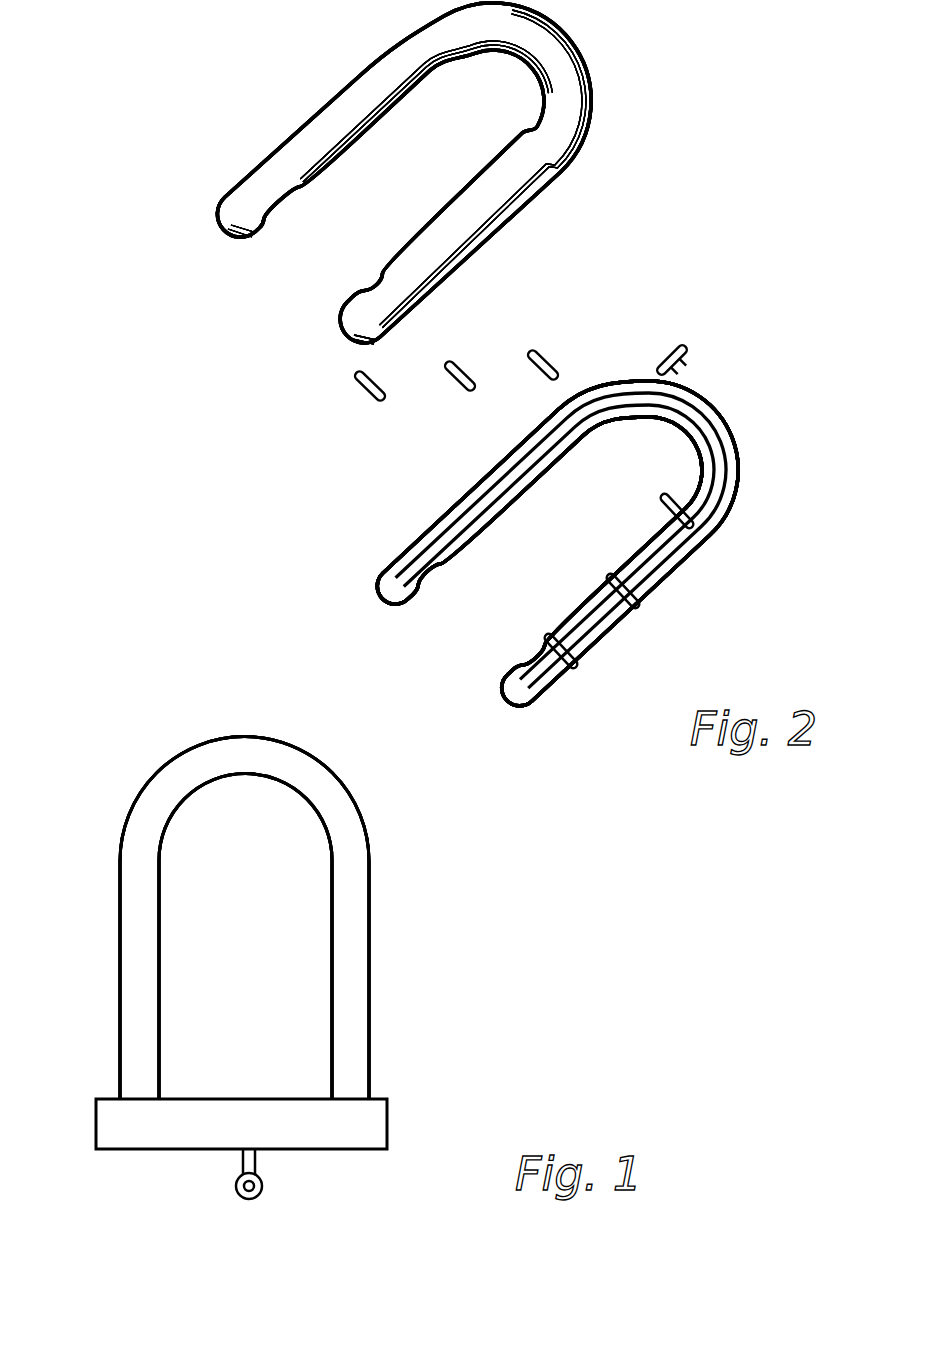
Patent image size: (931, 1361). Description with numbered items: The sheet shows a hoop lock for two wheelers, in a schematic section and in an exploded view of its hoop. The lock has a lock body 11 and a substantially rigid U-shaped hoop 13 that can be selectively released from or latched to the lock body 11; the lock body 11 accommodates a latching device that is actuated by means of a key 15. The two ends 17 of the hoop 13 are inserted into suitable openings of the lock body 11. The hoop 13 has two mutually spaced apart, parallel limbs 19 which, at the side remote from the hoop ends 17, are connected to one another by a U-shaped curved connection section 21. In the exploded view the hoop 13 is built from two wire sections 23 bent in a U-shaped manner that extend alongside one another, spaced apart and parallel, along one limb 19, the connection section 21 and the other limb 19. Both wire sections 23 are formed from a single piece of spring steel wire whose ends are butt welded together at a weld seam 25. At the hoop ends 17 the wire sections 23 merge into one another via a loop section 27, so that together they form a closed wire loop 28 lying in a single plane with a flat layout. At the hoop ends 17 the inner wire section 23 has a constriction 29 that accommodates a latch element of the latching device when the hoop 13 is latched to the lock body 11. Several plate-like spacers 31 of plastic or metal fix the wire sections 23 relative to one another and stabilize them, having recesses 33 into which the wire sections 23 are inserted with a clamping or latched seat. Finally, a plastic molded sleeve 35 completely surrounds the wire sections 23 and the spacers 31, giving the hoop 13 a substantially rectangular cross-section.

In FIG. 1, the lock body 11 is at (371, 1126).
In FIG. 2, the U-shaped hoop 13 is at (723, 134).
In FIG. 1, the U-shaped hoop 13 is at (356, 990).
In FIG. 1, the key 15 is at (263, 1184).
In FIG. 2, the hoop ends 17 is at (189, 212).
In FIG. 1, the hoop ends 17 is at (109, 1094).
In FIG. 2, the limbs 19 is at (311, 112).
In FIG. 1, the limbs 19 is at (130, 871).
In FIG. 2, the connection section 21 is at (574, 52).
In FIG. 1, the connection section 21 is at (186, 752).
In FIG. 2, the wire sections 23 is at (737, 490).
In FIG. 2, the weld seam 25 is at (481, 537).
In FIG. 2, the loop section 27 is at (374, 598).
In FIG. 2, the closed wire loop 28 is at (456, 491).
In FIG. 2, the constriction 29 is at (516, 654).
In FIG. 2, the spacers 31 is at (560, 356).
In FIG. 2, the recesses 33 is at (694, 361).
In FIG. 2, the sleeve 35 is at (518, 181).